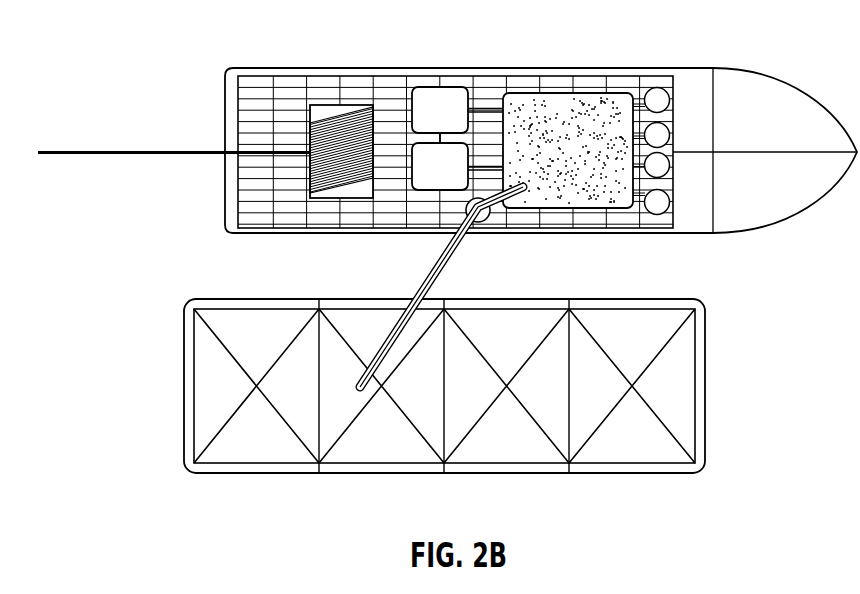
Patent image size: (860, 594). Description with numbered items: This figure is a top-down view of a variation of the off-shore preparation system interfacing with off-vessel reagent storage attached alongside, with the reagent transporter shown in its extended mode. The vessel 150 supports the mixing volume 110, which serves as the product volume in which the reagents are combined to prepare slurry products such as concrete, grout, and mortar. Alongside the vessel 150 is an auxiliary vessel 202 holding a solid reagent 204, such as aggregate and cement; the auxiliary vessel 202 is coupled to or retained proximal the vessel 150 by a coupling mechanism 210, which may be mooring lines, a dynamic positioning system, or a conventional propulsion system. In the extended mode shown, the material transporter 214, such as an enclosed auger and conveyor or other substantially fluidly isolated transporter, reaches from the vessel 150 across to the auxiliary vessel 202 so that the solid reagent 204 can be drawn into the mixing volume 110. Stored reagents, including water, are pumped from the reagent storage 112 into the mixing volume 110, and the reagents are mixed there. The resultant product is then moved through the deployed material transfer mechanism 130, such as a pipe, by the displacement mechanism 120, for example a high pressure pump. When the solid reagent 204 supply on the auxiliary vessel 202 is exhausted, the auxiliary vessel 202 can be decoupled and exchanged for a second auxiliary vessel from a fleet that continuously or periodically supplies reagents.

The mixing volume 110 is at (608, 98).
The reagent storage 112 is at (672, 470).
The displacement mechanism 120 is at (433, 193).
The material transfer mechanism 130 is at (342, 112).
The vessel 150 is at (773, 218).
The auxiliary vessel 202 is at (498, 417).
The solid reagent 204 is at (640, 453).
The coupling mechanism 210 is at (600, 236).
The material transporter 214 is at (393, 330).